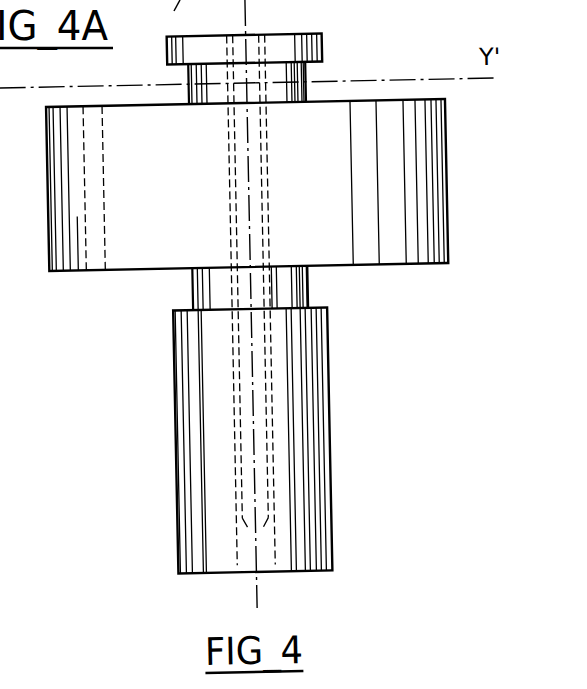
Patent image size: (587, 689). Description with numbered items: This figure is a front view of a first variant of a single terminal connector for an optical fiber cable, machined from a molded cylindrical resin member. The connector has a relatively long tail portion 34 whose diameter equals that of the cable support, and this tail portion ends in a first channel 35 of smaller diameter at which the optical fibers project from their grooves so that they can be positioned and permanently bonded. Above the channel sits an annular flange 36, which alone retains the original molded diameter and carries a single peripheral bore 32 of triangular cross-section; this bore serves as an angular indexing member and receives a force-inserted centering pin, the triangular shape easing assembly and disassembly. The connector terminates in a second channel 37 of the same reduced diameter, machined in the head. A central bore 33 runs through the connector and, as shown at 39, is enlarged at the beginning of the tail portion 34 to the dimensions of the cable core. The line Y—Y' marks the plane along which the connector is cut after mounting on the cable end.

The peripheral bore 32 is at (90, 259).
The central bore 33 is at (258, 34).
The tail portion 34 is at (303, 433).
The first channel 35 is at (294, 287).
The annular flange 36 is at (423, 205).
The second channel 37 is at (294, 74).
The enlargement of the bore 39 is at (258, 560).